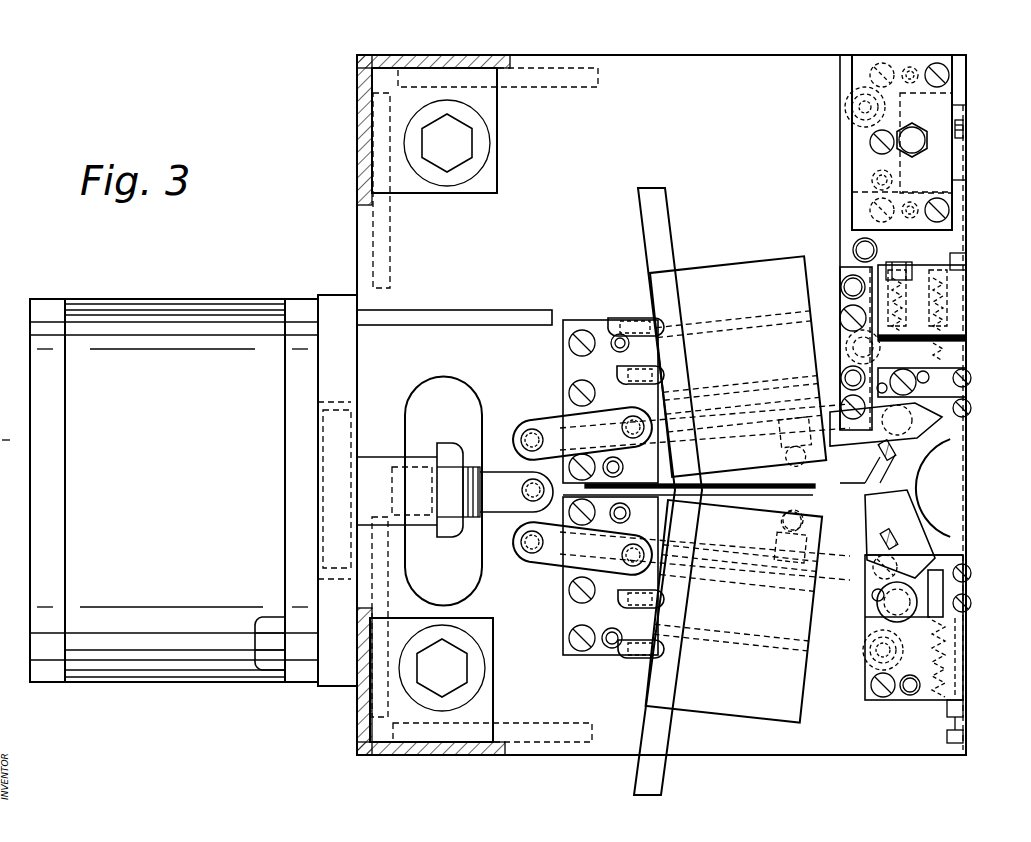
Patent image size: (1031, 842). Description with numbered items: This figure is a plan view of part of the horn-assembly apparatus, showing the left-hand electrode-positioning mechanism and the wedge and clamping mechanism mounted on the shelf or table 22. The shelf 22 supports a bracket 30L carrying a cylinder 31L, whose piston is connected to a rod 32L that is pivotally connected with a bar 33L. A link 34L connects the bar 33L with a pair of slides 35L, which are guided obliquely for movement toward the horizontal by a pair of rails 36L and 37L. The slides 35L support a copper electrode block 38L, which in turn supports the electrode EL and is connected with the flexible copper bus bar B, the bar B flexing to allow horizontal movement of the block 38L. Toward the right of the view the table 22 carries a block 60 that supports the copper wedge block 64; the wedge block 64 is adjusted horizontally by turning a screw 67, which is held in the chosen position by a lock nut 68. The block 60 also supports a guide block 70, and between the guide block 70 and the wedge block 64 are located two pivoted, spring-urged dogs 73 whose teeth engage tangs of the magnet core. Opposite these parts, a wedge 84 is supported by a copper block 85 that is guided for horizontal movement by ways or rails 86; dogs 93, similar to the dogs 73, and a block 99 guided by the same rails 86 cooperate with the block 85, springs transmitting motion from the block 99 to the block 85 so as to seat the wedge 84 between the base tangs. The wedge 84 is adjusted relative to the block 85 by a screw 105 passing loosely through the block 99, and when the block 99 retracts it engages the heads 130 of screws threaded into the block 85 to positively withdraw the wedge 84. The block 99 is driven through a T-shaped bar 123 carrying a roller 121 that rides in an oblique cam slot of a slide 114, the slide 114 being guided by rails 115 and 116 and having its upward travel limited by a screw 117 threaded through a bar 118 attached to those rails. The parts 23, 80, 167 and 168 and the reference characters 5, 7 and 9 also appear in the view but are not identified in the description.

The shelf 22 is at (682, 55).
The mounting bolt block 23 is at (462, 55).
The bracket 30L is at (327, 295).
The cylinder 31L is at (180, 291).
The rod 32L is at (375, 457).
The bar 33L is at (515, 520).
The link 34L is at (553, 417).
The slides 35L is at (663, 470).
The rail 36L is at (598, 314).
The rail 37L is at (637, 499).
The copper electrode block 38L is at (757, 267).
The copper bus bar B is at (640, 218).
The section line 5 is at (970, 41).
The section line 7 is at (503, 455).
The section line 9 is at (997, 568).
The block 60 is at (865, 672).
The copper wedge block 64 is at (945, 562).
The screw 67 is at (963, 738).
The lock nut 68 is at (963, 705).
The guide block 70 is at (868, 602).
The dogs 73 is at (952, 542).
The roller 80 is at (868, 618).
The wedge 84 is at (966, 398).
The copper block 85 is at (966, 353).
The ways or rails 86 is at (843, 267).
The dogs 93 is at (950, 422).
The block 99 is at (966, 296).
The screw 105 is at (960, 258).
The slide 114 is at (885, 171).
The rail 115 is at (955, 49).
The rail 116 is at (960, 213).
The screw 117 is at (913, 125).
The bar 118 is at (872, 49).
The roller 121 is at (940, 125).
The bar of T formation 123 is at (960, 169).
The heads of screws 130 is at (900, 265).
The lever 167 is at (907, 492).
The screw 168 is at (797, 490).
The electrode EL is at (900, 509).